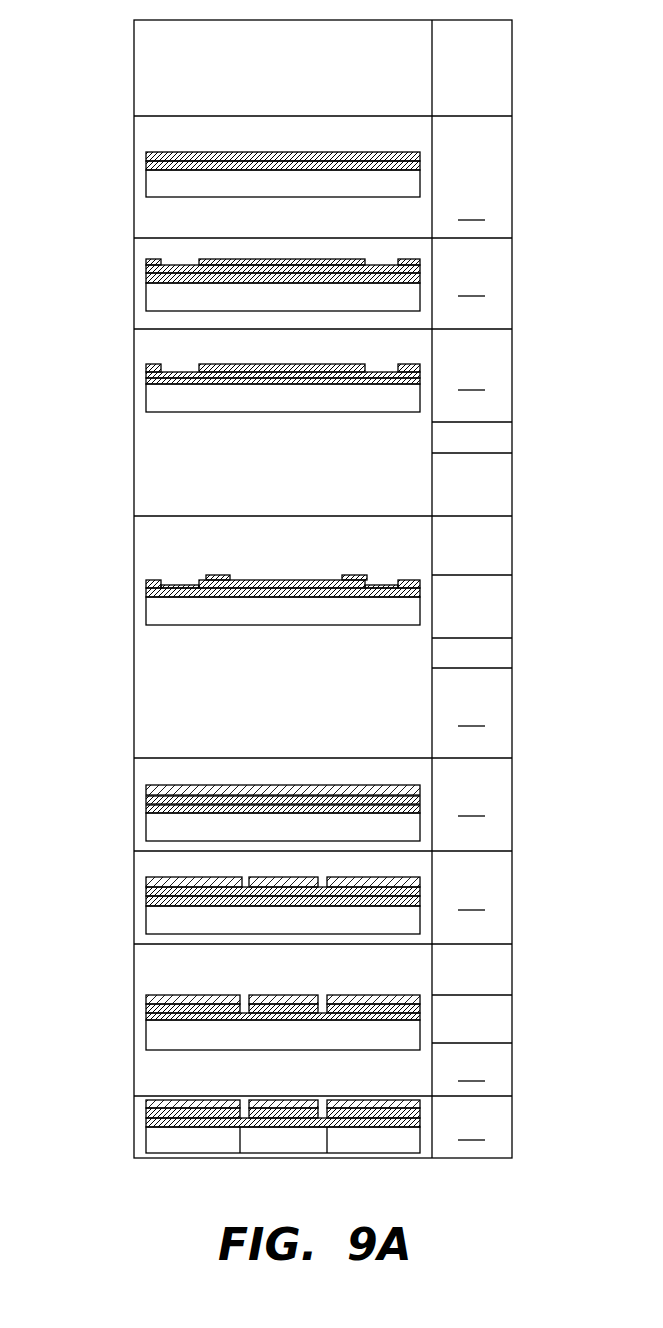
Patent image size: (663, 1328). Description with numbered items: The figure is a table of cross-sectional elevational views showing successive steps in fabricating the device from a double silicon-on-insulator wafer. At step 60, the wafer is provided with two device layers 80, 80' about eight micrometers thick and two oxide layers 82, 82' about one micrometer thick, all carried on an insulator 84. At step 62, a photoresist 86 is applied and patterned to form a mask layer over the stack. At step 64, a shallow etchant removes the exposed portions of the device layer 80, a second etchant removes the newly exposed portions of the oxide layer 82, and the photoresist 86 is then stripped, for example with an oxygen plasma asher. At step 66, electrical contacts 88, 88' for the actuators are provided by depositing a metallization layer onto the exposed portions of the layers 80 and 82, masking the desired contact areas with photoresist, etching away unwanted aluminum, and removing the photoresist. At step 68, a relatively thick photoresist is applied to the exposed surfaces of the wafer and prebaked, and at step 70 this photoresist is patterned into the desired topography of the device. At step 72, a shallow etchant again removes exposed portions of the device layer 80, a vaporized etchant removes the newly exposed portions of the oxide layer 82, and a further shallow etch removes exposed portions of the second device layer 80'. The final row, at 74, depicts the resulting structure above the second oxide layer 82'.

The double SOI wafer providing step 60 is at (471, 208).
The photoresist application and patterning step 62 is at (471, 284).
The shallow etching step 64 is at (471, 378).
The electrical contact forming step 66 is at (471, 714).
The thick photoresist application step 68 is at (471, 804).
The photoresist patterning step 70 is at (471, 898).
The stack etching step 72 is at (471, 1069).
The step: singulate substrate 74 is at (471, 1128).
The device layer 80 is at (240, 569).
The second device layer 80' is at (237, 607).
The oxide layer 82 is at (318, 575).
The second oxide layer 82' is at (316, 653).
The insulator 84 is at (146, 180).
The photoresist 86 is at (146, 263).
The electrical contact 88 is at (286, 550).
The electrical contact 88' is at (281, 554).